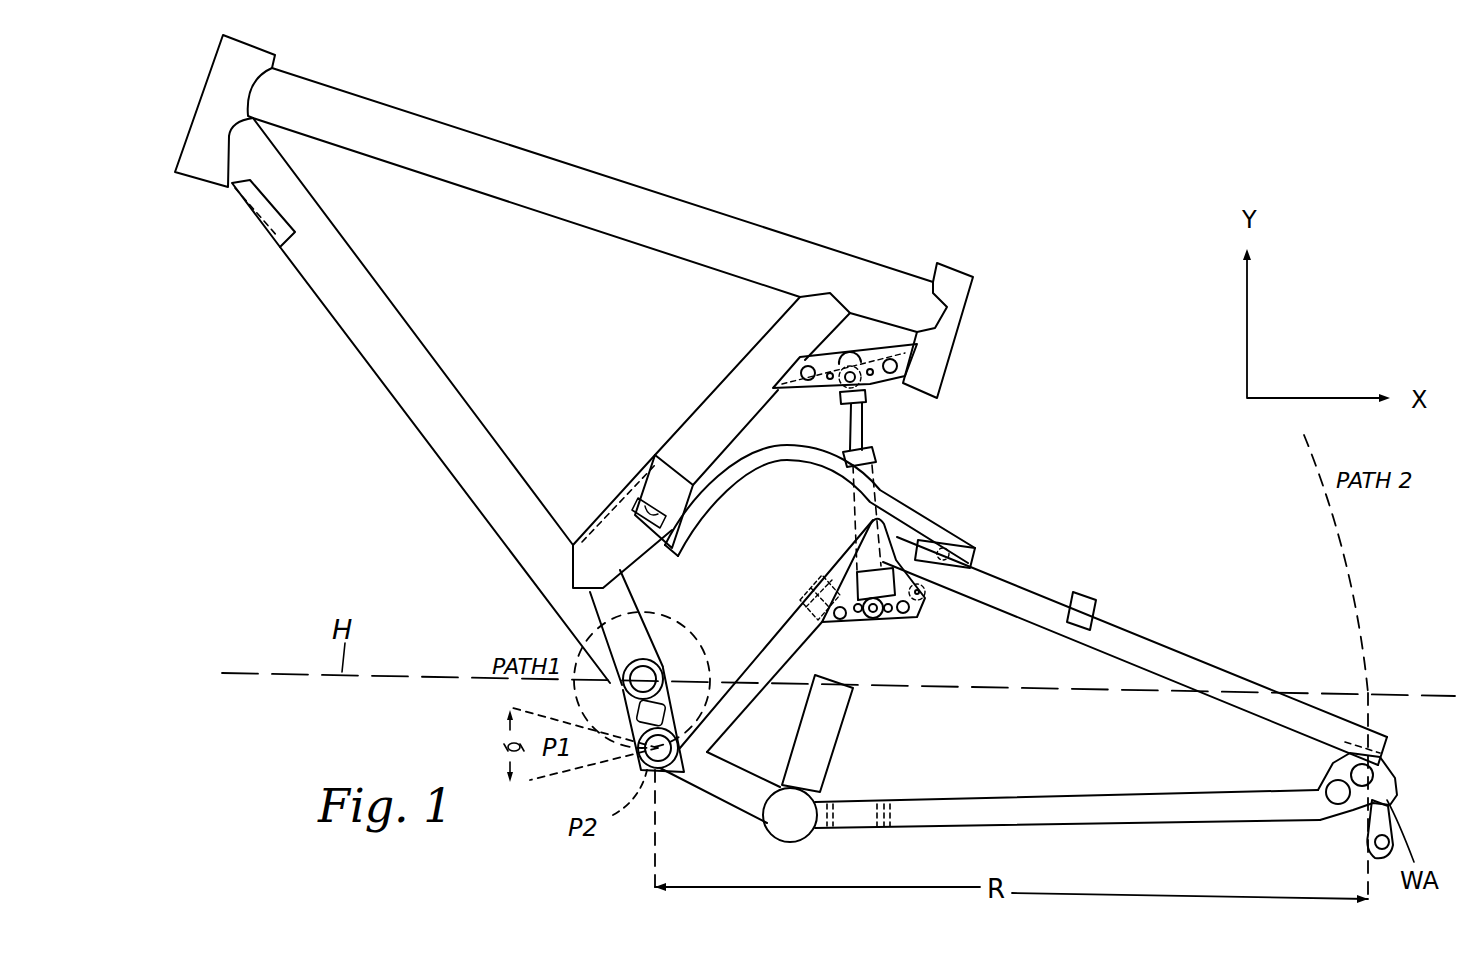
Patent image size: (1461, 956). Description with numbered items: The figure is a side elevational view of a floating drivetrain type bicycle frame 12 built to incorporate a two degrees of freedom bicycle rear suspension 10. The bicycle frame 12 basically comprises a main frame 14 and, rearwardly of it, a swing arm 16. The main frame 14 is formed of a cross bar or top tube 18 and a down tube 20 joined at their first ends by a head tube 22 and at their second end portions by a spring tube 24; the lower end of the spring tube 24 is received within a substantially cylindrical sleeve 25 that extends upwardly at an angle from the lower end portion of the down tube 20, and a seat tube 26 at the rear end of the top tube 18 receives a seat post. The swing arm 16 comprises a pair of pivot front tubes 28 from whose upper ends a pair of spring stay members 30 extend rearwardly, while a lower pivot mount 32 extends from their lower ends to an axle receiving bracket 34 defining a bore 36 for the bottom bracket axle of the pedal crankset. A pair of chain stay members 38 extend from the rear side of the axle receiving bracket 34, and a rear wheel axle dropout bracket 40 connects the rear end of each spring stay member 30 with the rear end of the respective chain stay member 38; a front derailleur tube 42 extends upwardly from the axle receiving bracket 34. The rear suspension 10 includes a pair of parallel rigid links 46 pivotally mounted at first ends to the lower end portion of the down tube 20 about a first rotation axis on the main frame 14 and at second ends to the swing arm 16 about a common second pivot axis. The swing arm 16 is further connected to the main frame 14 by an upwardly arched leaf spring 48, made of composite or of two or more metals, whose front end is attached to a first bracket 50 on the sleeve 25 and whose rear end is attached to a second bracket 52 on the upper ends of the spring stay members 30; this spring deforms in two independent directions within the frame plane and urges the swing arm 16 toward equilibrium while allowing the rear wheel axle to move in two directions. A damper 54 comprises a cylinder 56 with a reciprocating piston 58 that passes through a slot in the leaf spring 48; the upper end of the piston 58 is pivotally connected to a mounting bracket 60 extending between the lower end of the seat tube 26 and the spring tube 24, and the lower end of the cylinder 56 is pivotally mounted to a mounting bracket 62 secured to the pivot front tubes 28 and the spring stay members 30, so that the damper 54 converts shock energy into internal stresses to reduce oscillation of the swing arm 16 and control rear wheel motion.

The two degrees of freedom bicycle rear suspension 10 is at (1050, 422).
The bicycle frame 12 is at (1137, 188).
The main frame 14 is at (735, 212).
The swing arm 16 is at (1137, 617).
The top tube 18 is at (583, 172).
The down tube 20 is at (380, 305).
The head tube 22 is at (207, 152).
The spring tube 24 is at (748, 377).
The sleeve 25 is at (618, 515).
The seat tube 26 is at (950, 345).
The pivot front tubes 28 is at (768, 643).
The spring stay members 30 is at (1215, 670).
The lower pivot mount 32 is at (738, 788).
The axle receiving bracket 34 is at (813, 830).
The bore 36 is at (793, 817).
The chain stay members 38 is at (1118, 808).
The rear wheel axle dropout bracket 40 is at (1388, 780).
The front derailleur tube 42 is at (823, 757).
The parallel rigid links 46 is at (667, 707).
The leaf spring 48 is at (830, 463).
The first bracket 50 is at (652, 510).
The second bracket 52 is at (997, 563).
The damper 54 is at (876, 463).
The cylinder 56 is at (878, 440).
The piston 58 is at (848, 418).
The mounting bracket 60 is at (878, 356).
The mounting bracket 62 is at (907, 618).